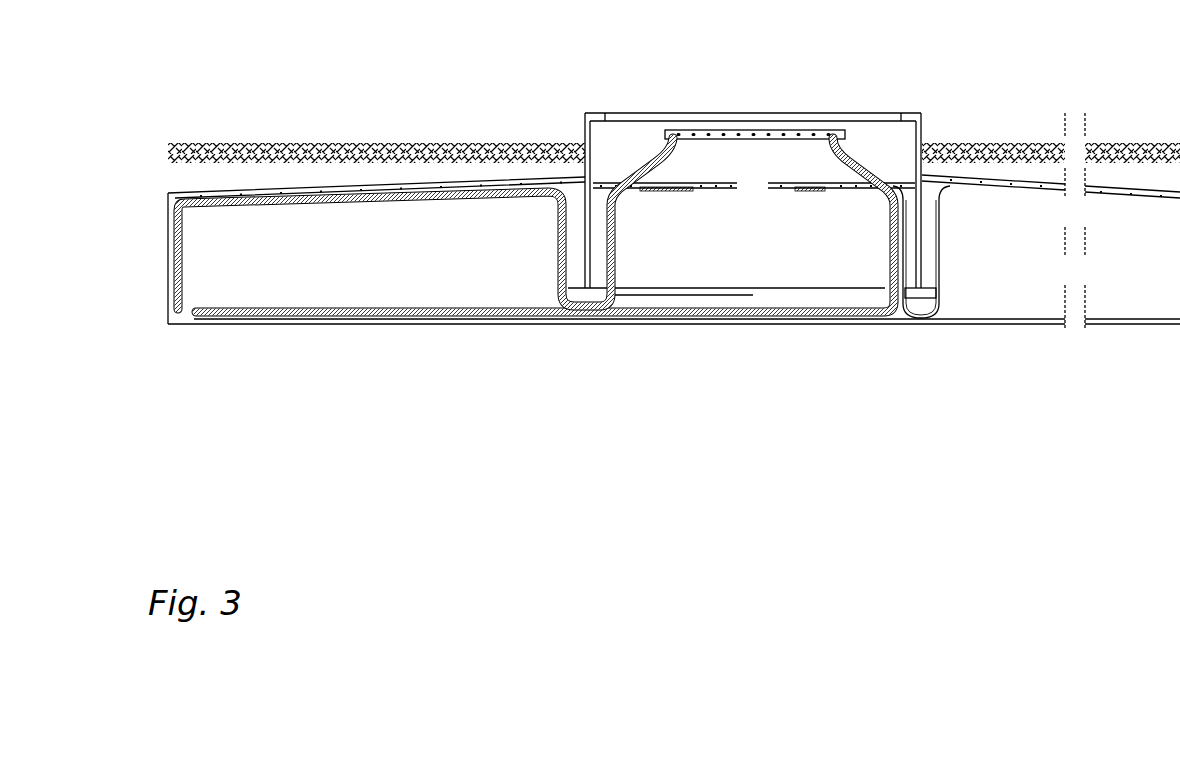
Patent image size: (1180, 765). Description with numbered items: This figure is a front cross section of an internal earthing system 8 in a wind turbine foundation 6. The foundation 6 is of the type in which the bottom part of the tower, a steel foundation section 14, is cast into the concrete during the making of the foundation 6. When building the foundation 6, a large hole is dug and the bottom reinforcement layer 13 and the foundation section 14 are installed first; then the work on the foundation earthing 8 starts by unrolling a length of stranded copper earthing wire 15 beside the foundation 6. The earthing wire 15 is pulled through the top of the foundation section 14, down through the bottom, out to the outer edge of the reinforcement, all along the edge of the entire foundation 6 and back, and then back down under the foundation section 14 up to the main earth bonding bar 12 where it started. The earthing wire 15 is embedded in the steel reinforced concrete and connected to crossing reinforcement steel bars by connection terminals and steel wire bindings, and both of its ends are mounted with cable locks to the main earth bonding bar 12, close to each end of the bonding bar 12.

The wind turbine foundation 6 is at (382, 275).
The internal earthing system 8 is at (248, 320).
The main earth bonding bar 12 is at (740, 136).
The bottom reinforcement layer 13 is at (620, 322).
The foundation section 14 is at (587, 117).
The earthing wire 15 is at (747, 322).